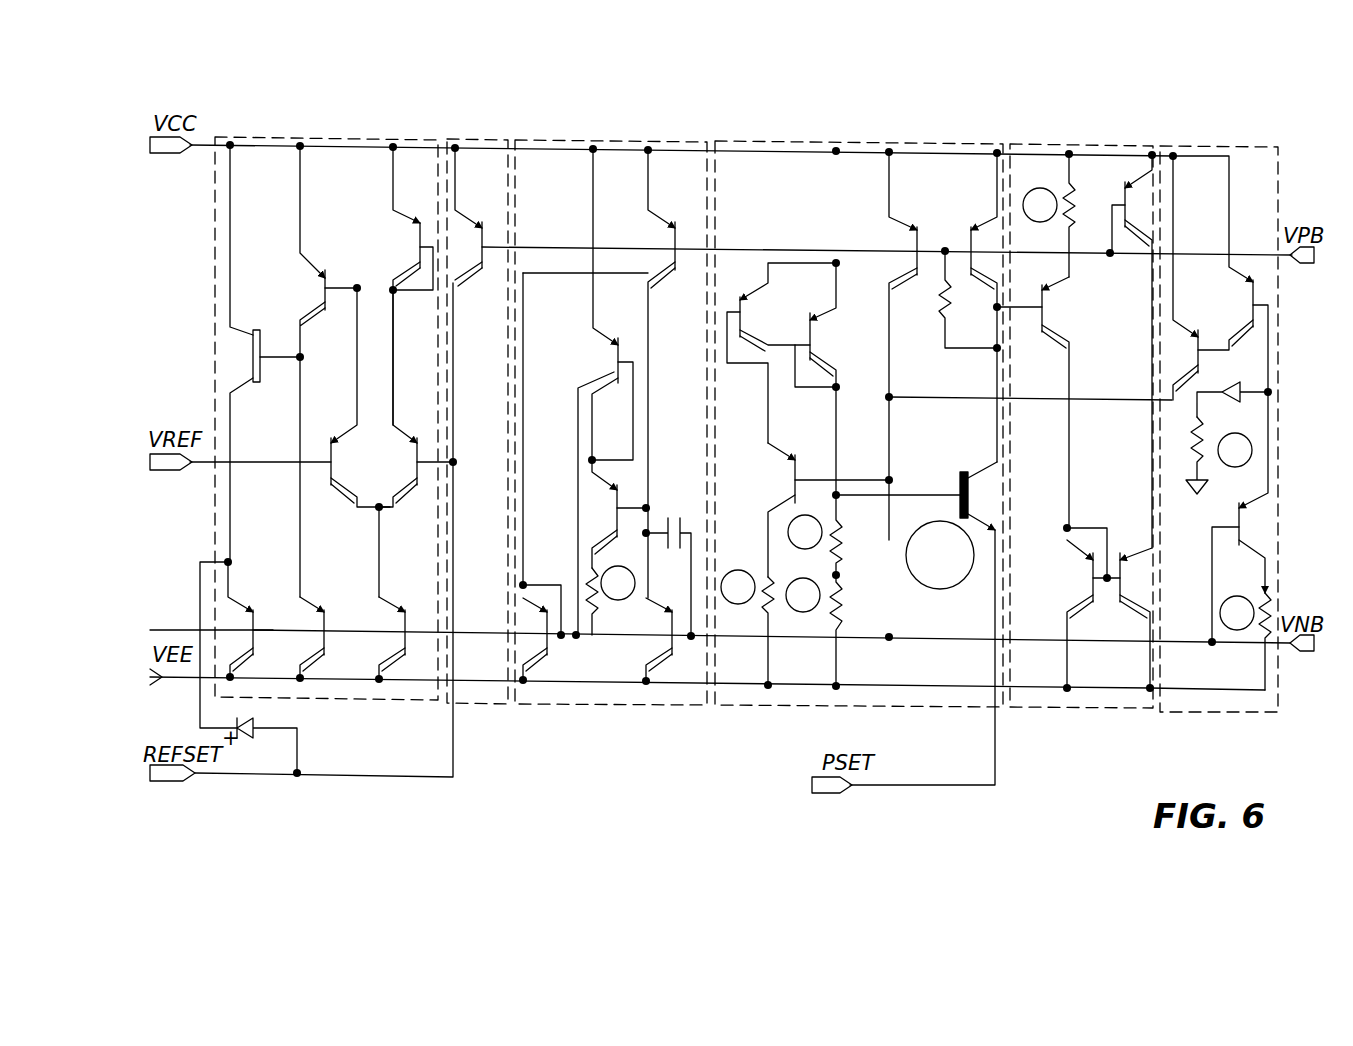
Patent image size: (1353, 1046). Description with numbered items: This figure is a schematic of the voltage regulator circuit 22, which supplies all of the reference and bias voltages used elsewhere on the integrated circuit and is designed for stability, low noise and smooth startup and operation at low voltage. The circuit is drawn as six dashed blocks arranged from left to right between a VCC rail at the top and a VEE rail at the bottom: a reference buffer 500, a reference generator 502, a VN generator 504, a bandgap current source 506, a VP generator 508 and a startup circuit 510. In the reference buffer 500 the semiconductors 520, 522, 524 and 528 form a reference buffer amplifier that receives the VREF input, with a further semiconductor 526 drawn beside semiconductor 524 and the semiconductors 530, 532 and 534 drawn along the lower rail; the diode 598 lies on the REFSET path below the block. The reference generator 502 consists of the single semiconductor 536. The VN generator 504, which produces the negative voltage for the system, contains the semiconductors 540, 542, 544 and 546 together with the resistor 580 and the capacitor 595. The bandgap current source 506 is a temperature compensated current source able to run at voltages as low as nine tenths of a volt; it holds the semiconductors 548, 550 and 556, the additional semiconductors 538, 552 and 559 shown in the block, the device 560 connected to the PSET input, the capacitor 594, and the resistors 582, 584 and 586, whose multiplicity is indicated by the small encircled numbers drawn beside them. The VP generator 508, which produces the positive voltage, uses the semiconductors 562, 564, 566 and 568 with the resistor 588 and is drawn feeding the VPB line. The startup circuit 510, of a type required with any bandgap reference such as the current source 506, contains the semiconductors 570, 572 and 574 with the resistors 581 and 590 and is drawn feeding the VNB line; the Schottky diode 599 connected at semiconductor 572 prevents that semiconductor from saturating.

The reference buffer 500 is at (348, 128).
The reference generator 502 is at (493, 128).
The VN generator 504 is at (601, 128).
The bandgap current source 506 is at (791, 128).
The VP generator 508 is at (1071, 128).
The startup circuit 510 is at (1215, 133).
The voltage regulator circuit 22 is at (1258, 120).
The semiconductor 520 is at (248, 337).
The semiconductor 522 is at (312, 262).
The semiconductor 524 is at (348, 432).
The semiconductor 526 is at (402, 450).
The semiconductor 528 is at (398, 225).
The semiconductor 530 is at (245, 615).
The semiconductor 532 is at (315, 615).
The semiconductor 534 is at (390, 608).
The semiconductor 536 is at (463, 278).
The transistor 538 is at (600, 342).
The semiconductor 540 is at (660, 225).
The semiconductor 542 is at (550, 648).
The semiconductor 544 is at (598, 480).
The semiconductor 546 is at (664, 672).
The semiconductor 548 is at (760, 320).
The semiconductor 550 is at (820, 338).
The transistor 552 is at (780, 458).
The semiconductor 556 is at (972, 222).
The transistor 559 is at (903, 230).
The semiconductor 560 is at (960, 480).
The semiconductor 562 is at (1065, 290).
The semiconductor 564 is at (1118, 195).
The semiconductor 566 is at (1072, 555).
The semiconductor 568 is at (1128, 605).
The semiconductor 570 is at (1182, 335).
The semiconductor 572 is at (1232, 272).
The semiconductor 574 is at (1236, 512).
The resistor 580 is at (593, 622).
The resistor 581 is at (1203, 455).
The resistor 582 is at (760, 565).
The resistor 584 is at (832, 545).
The resistor 586 is at (830, 615).
The resistor 588 is at (1066, 190).
The resistor 590 is at (1258, 597).
The capacitor 594 is at (945, 322).
The capacitor 595 is at (678, 515).
The diode 598 is at (250, 732).
The Schottky diode 599 is at (1222, 397).